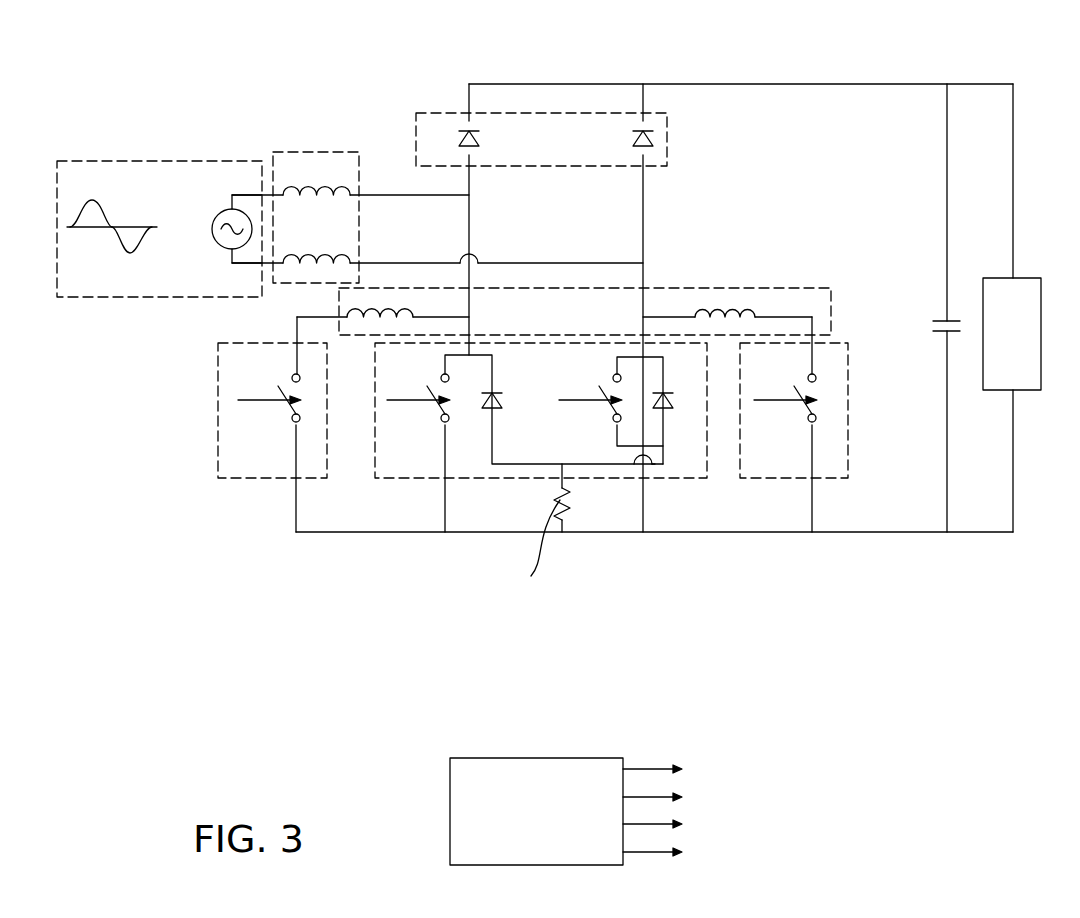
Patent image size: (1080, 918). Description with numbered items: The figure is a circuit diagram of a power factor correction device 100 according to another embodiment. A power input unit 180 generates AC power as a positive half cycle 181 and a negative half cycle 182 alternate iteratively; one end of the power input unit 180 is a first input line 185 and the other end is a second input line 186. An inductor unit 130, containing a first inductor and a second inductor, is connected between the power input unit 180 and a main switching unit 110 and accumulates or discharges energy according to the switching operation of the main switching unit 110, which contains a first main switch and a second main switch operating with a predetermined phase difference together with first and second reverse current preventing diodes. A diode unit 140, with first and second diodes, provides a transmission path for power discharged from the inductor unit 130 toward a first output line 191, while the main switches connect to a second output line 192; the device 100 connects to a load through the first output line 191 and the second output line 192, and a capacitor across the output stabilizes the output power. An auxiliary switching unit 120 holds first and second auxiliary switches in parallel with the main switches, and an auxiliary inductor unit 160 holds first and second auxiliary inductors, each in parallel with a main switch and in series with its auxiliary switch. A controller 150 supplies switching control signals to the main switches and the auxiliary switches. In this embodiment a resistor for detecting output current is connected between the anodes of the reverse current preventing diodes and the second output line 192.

The power factor correction device 100 is at (672, 311).
The main switching unit 110 is at (413, 478).
The auxiliary switching unit 120 is at (533, 500).
The inductor unit 130 is at (312, 152).
The diode unit 140 is at (667, 138).
The controller 150 is at (475, 758).
The auxiliary inductor unit 160 is at (746, 288).
The power input unit 180 is at (162, 211).
The positive half cycle 181 is at (95, 195).
The negative half cycle 182 is at (130, 252).
The first input line 185 is at (243, 195).
The second input line 186 is at (244, 263).
The first output line 191 is at (811, 84).
The second output line 192 is at (978, 532).